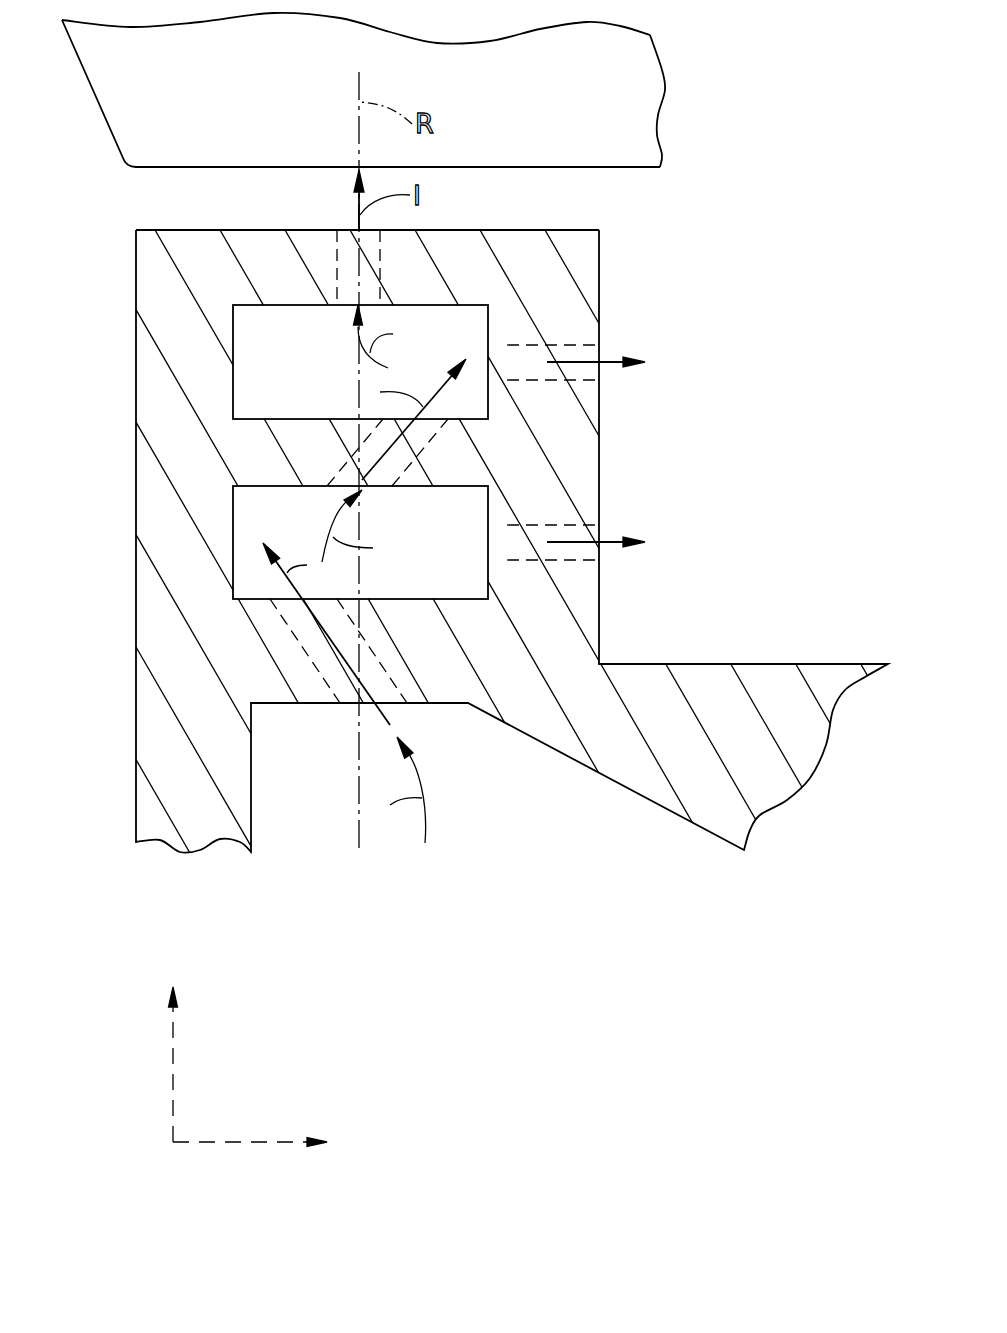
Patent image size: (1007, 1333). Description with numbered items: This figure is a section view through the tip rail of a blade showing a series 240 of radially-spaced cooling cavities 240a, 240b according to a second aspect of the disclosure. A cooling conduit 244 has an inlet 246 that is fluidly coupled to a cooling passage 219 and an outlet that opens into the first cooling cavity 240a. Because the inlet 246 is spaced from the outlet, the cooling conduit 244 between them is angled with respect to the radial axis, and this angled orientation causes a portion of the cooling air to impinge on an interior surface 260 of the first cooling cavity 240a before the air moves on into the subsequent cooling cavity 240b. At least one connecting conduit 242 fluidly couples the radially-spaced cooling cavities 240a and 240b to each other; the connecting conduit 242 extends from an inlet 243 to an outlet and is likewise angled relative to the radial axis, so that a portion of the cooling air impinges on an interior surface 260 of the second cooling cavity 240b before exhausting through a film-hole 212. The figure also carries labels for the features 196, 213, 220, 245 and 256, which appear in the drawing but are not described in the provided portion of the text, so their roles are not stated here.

The outer surface of component 196 is at (567, 229).
The film-hole 212 is at (382, 258).
The discharge passages 213 is at (560, 350).
The cooling passage 219 is at (517, 839).
The component body 220 is at (125, 607).
The series of radially-spaced cooling cavities 240 is at (170, 418).
The first cooling cavity 240a is at (316, 519).
The subsequent cooling cavity 240b is at (313, 352).
The connecting conduit 242 is at (410, 450).
The inlet 243 is at (376, 489).
The cooling conduit 244 is at (373, 668).
The impingement surface 245 is at (430, 419).
The inlet 246 is at (392, 705).
The adjacent component 256 is at (291, 137).
The interior surface 260 is at (488, 327).